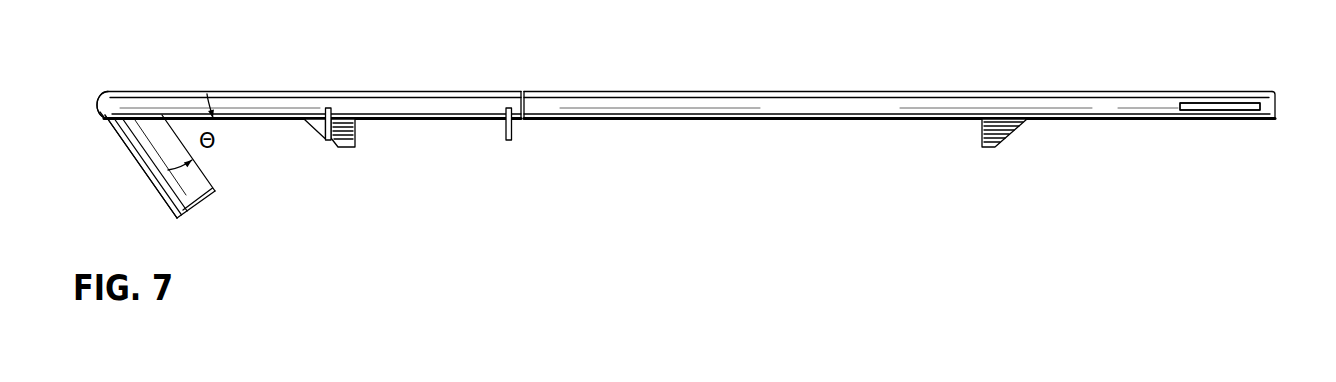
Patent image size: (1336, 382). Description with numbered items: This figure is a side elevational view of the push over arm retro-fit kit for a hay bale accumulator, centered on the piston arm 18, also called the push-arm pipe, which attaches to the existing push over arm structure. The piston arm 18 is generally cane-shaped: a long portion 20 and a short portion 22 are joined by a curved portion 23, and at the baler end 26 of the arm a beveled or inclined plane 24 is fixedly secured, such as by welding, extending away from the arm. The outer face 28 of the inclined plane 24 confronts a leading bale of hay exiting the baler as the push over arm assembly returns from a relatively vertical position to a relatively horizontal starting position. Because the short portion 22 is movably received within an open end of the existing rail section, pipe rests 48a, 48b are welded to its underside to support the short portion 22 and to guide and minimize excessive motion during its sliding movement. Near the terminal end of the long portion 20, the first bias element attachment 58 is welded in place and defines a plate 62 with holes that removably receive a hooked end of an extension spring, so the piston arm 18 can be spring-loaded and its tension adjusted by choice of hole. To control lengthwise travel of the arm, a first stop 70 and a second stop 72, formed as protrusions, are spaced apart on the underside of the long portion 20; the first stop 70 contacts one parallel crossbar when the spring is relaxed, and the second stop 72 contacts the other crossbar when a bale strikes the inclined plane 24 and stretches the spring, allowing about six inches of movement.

The piston arm 18 is at (686, 79).
The long portion 20 is at (693, 91).
The short portion 22 is at (443, 91).
The curved portion 23 is at (97, 102).
The inclined plane 24 is at (166, 189).
The baler end 26 is at (93, 112).
The outer face 28 is at (158, 195).
The pipe rest 48a is at (328, 142).
The pipe rest 48b is at (509, 141).
The first bias element attachment 58 is at (1235, 102).
The plate 62 is at (1205, 110).
The first stop 70 is at (983, 148).
The second stop 72 is at (312, 124).